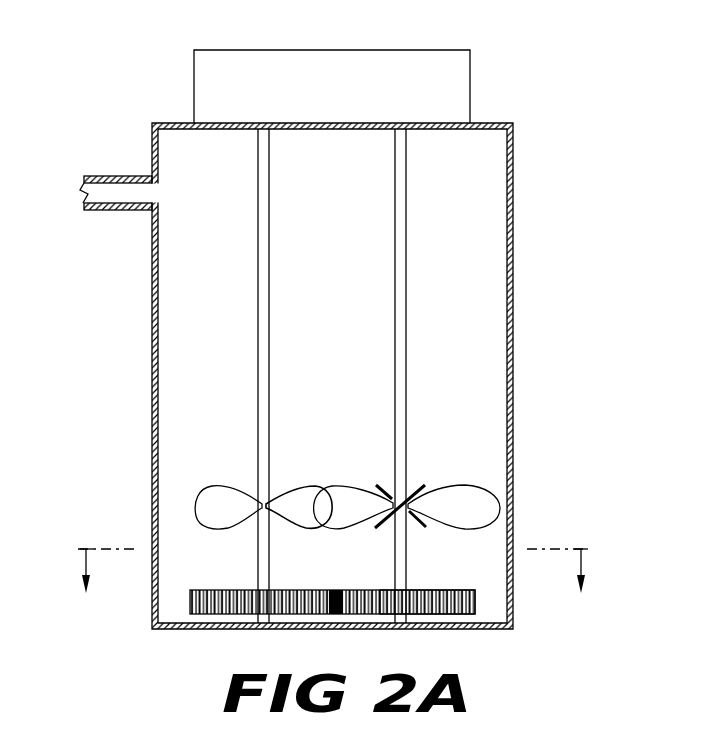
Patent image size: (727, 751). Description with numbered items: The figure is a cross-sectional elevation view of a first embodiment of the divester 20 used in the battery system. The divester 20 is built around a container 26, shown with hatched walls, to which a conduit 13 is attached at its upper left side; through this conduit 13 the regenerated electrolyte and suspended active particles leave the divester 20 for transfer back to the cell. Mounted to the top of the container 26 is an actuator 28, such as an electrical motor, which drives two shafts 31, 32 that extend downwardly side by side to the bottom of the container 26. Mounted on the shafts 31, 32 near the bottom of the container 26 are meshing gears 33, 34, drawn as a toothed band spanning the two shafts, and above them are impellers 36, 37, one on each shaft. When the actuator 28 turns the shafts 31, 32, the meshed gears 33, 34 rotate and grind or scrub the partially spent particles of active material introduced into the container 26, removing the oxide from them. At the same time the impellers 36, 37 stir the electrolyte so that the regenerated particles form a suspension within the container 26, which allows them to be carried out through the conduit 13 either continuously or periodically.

The divester 20 is at (516, 84).
The actuator 28 is at (470, 106).
The input conduit 13 is at (114, 176).
The container 26 is at (152, 406).
The shaft 31 is at (269, 353).
The shaft 32 is at (406, 360).
The impeller 36 is at (233, 490).
The impeller 37 is at (448, 498).
The meshing gear 33 is at (233, 596).
The meshing gear 34 is at (427, 597).